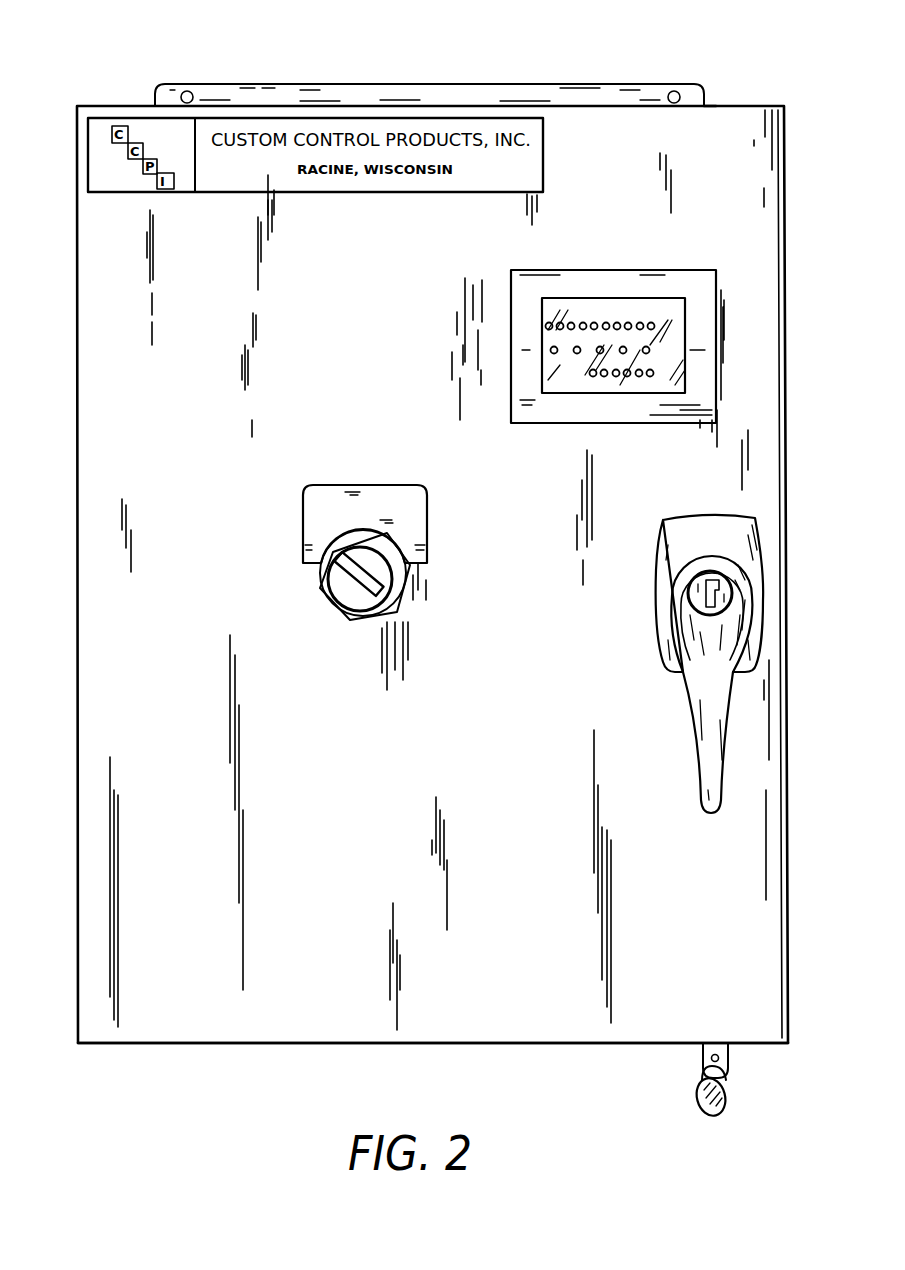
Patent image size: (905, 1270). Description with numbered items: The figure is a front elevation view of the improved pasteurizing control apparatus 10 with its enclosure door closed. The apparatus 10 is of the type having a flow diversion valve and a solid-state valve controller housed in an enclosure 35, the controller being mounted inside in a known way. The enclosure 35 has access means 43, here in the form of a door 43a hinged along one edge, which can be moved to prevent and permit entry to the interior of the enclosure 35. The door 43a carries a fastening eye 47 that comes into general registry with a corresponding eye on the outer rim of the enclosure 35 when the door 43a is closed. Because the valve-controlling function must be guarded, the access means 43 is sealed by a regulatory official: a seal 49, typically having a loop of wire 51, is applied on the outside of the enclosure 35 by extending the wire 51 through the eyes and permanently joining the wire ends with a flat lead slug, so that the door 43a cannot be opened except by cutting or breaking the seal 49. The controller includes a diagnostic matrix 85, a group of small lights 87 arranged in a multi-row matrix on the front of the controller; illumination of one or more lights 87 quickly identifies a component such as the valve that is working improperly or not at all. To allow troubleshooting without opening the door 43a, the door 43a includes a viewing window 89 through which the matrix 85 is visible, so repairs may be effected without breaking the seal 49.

The pasteurizing control apparatus 10 is at (326, 70).
The enclosure 35 is at (207, 1030).
The access means 43 is at (655, 72).
The door 43a is at (716, 104).
The diagnostic matrix 85 is at (608, 304).
The lights 87 is at (617, 325).
The viewing window 89 is at (571, 393).
The fastening eye 47 is at (702, 1056).
The seal 49 is at (676, 1092).
The loop of wire 51 is at (728, 1076).